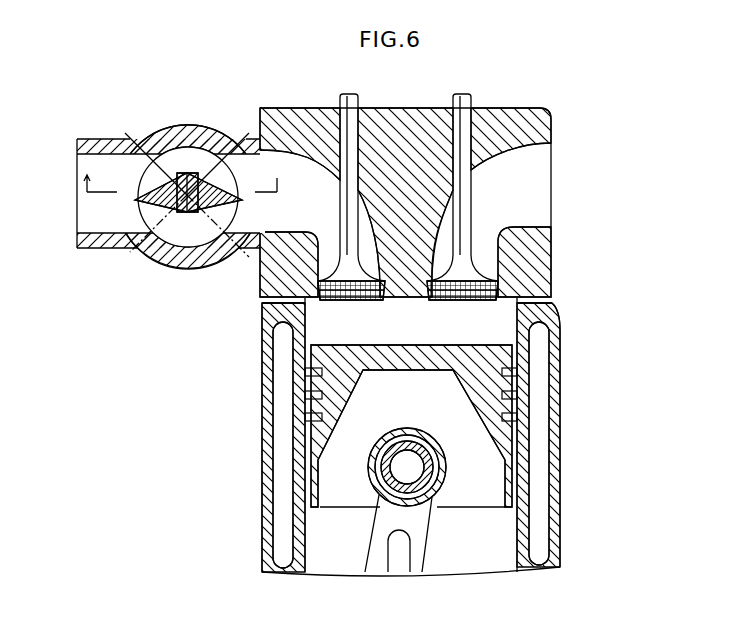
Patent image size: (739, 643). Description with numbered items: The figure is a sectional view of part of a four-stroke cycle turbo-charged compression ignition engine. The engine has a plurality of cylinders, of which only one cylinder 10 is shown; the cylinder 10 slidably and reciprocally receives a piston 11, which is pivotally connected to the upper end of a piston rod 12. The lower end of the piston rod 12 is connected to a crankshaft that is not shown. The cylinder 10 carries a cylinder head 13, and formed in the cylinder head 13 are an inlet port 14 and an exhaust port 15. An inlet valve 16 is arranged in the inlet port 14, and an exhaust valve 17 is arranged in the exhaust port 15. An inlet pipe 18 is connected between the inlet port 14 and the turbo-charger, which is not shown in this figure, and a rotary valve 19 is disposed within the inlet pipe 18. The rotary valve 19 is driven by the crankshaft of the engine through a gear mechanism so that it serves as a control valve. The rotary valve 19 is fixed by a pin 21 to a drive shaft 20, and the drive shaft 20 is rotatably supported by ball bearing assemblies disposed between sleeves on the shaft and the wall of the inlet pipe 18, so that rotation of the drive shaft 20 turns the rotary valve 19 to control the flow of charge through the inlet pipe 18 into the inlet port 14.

The cylinder 10 is at (292, 548).
The piston 11 is at (397, 349).
The piston rod 12 is at (377, 553).
The cylinder head 13 is at (262, 290).
The inlet port 14 is at (333, 299).
The exhaust port 15 is at (476, 296).
The inlet valve 16 is at (340, 214).
The exhaust valve 17 is at (472, 206).
The inlet pipe 18 is at (182, 197).
The rotary valve 19 is at (154, 188).
The drive shaft 20 is at (199, 213).
The pin 21 is at (180, 213).